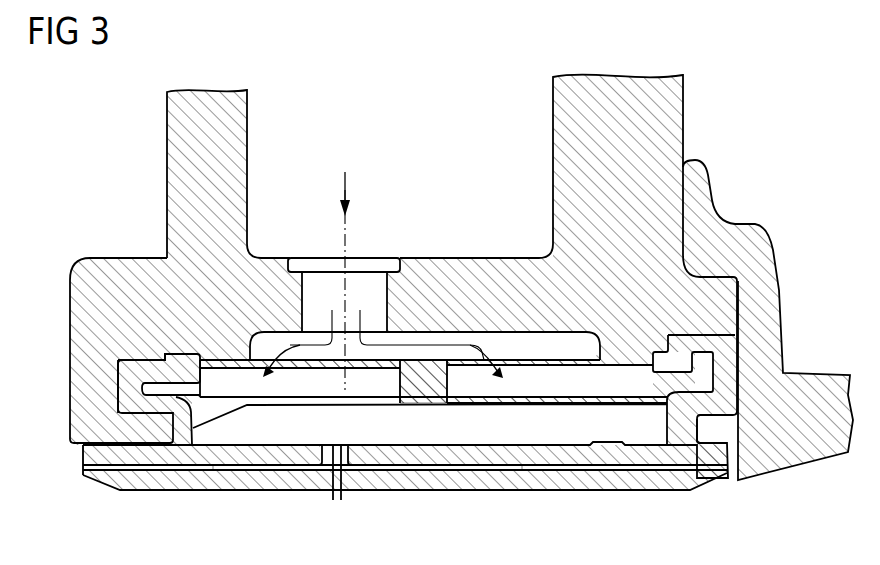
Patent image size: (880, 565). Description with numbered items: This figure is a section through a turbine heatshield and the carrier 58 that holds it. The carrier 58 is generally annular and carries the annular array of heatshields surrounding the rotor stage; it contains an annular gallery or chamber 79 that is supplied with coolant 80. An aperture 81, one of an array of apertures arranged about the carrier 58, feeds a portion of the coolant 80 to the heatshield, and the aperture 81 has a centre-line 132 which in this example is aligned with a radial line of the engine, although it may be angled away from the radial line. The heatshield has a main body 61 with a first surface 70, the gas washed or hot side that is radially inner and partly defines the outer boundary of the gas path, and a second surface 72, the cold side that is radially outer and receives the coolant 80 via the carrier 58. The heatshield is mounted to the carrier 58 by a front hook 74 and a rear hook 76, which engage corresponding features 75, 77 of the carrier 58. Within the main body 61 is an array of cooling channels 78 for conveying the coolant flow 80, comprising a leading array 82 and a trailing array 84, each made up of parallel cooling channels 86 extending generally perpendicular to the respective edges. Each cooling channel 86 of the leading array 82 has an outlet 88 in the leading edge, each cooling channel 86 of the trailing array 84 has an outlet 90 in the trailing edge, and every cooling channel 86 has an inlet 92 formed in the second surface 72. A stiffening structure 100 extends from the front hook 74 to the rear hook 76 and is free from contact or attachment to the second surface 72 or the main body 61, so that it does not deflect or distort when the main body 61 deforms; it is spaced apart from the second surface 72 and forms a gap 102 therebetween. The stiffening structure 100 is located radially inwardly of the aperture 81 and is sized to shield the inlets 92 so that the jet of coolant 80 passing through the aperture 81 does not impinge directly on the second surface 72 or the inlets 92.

The carrier 58 is at (160, 123).
The annular gallery or chamber 79 is at (465, 132).
The coolant flow 80 is at (347, 182).
The aperture 81 is at (313, 273).
The centre-line of the aperture 132 is at (348, 241).
The front hook 74 is at (130, 378).
The corresponding feature of the carrier 75 is at (150, 428).
The rear hook 76 is at (730, 355).
The corresponding feature of the carrier 77 is at (718, 427).
The main body 61 is at (83, 450).
The outlet 88 is at (83, 472).
The leading array of cooling channels 82 is at (182, 472).
The cooling channel 86 is at (213, 469).
The array of cooling channels 78 is at (302, 474).
The inlet 92 is at (333, 493).
The stiffening structure 100 is at (423, 386).
The trailing array of cooling channels 84 is at (452, 470).
The second surface 72 is at (538, 433).
The first surface 70 is at (662, 491).
The outlet 90 is at (734, 472).
The gap 102 is at (464, 437).